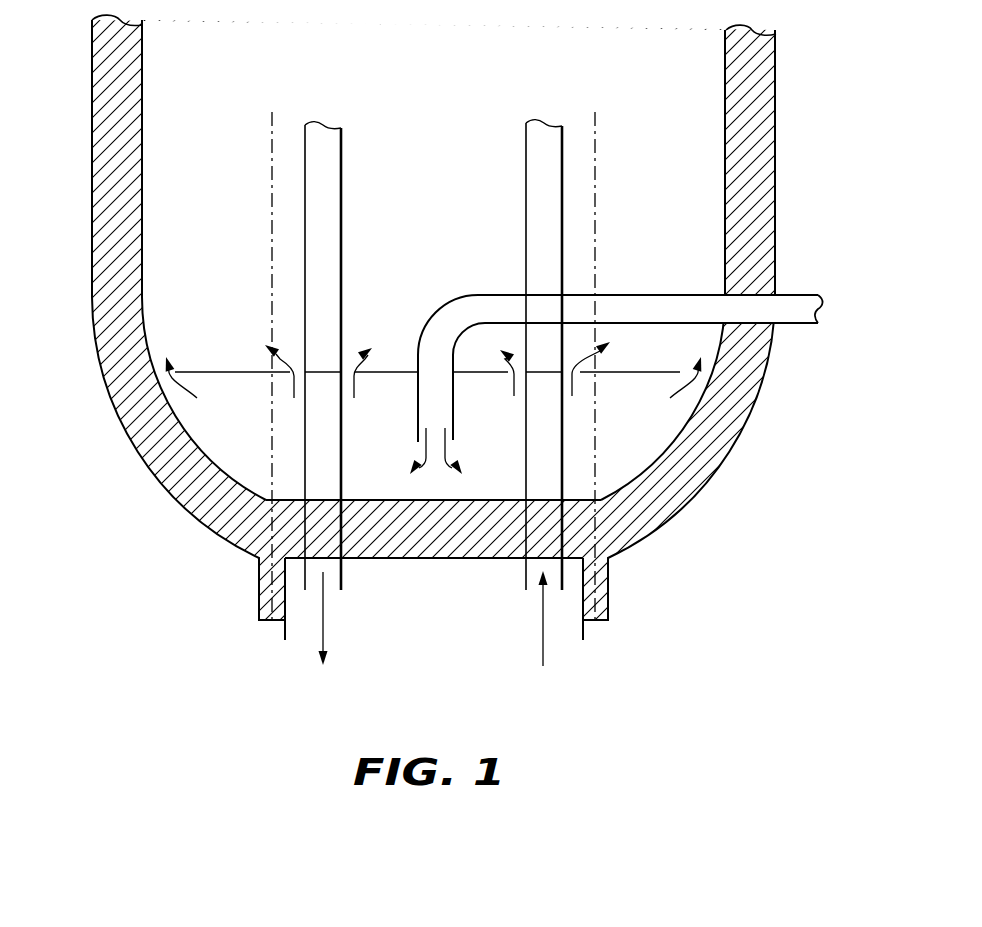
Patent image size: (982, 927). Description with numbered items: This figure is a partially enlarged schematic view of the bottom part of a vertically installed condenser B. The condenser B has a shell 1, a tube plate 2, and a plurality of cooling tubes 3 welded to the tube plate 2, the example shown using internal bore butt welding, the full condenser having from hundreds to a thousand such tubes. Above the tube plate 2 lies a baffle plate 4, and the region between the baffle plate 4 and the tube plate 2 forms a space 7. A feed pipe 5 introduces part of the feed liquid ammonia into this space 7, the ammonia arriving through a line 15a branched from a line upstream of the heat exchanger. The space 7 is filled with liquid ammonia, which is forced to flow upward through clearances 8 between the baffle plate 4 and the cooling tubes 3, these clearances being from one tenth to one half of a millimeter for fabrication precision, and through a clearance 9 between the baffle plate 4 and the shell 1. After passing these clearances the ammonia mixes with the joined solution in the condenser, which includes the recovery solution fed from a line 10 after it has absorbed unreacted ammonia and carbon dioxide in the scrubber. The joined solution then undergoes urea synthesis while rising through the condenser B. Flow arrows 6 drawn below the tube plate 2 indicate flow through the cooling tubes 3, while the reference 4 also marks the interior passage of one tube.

The condenser B is at (92, 125).
The shell 1 is at (776, 122).
The tube plate 2 is at (448, 559).
The cooling tubes 3 is at (341, 176).
The baffle plate 4 is at (323, 312).
The feed pipe 5 is at (437, 316).
The gas flow 6 is at (433, 639).
The space 7 is at (420, 449).
The clearances 8 is at (435, 359).
The clearance 9 is at (437, 358).
The line 10 is at (451, 366).
The line 15a is at (845, 308).